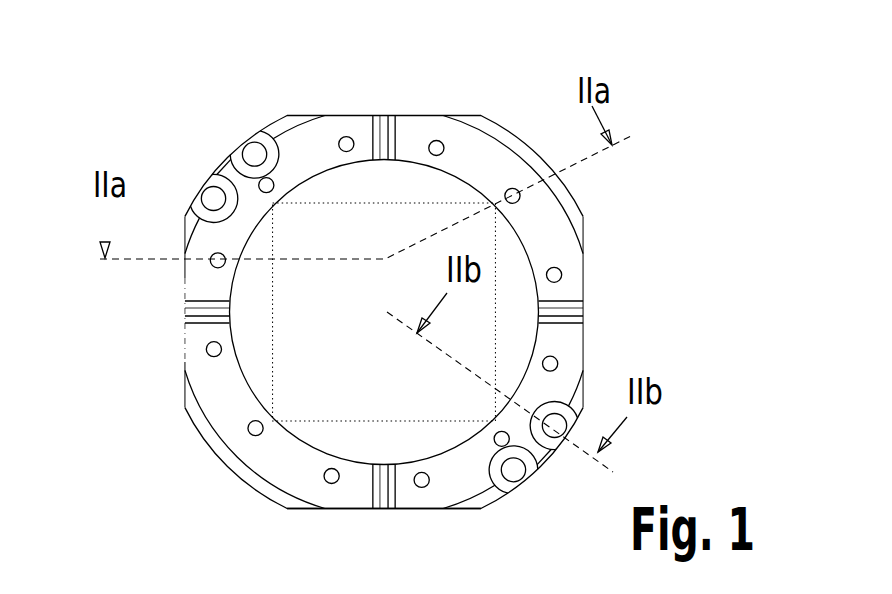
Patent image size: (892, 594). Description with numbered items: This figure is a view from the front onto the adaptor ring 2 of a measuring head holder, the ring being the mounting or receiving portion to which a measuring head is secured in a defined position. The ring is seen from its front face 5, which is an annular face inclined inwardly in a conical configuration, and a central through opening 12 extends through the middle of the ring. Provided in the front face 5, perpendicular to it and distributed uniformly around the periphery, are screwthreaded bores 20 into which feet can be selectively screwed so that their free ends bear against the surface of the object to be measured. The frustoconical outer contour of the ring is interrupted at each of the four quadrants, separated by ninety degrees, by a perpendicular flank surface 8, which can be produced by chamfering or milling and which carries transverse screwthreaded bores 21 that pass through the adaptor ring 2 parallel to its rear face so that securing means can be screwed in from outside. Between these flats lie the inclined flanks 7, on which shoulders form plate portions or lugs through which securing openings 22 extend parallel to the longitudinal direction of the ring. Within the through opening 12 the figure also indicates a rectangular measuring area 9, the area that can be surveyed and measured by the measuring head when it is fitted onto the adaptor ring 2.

The adaptor ring 2 is at (182, 480).
The front face 5 is at (445, 497).
The inclined flanks 7 is at (281, 124).
The perpendicular flank surface 8 is at (185, 333).
The rectangular measuring area 9 is at (275, 355).
The central through opening 12 is at (384, 312).
The screwthreaded bores 20 is at (252, 427).
The transverse screwthreaded bores 21 is at (385, 130).
The securing openings 22 is at (254, 150).